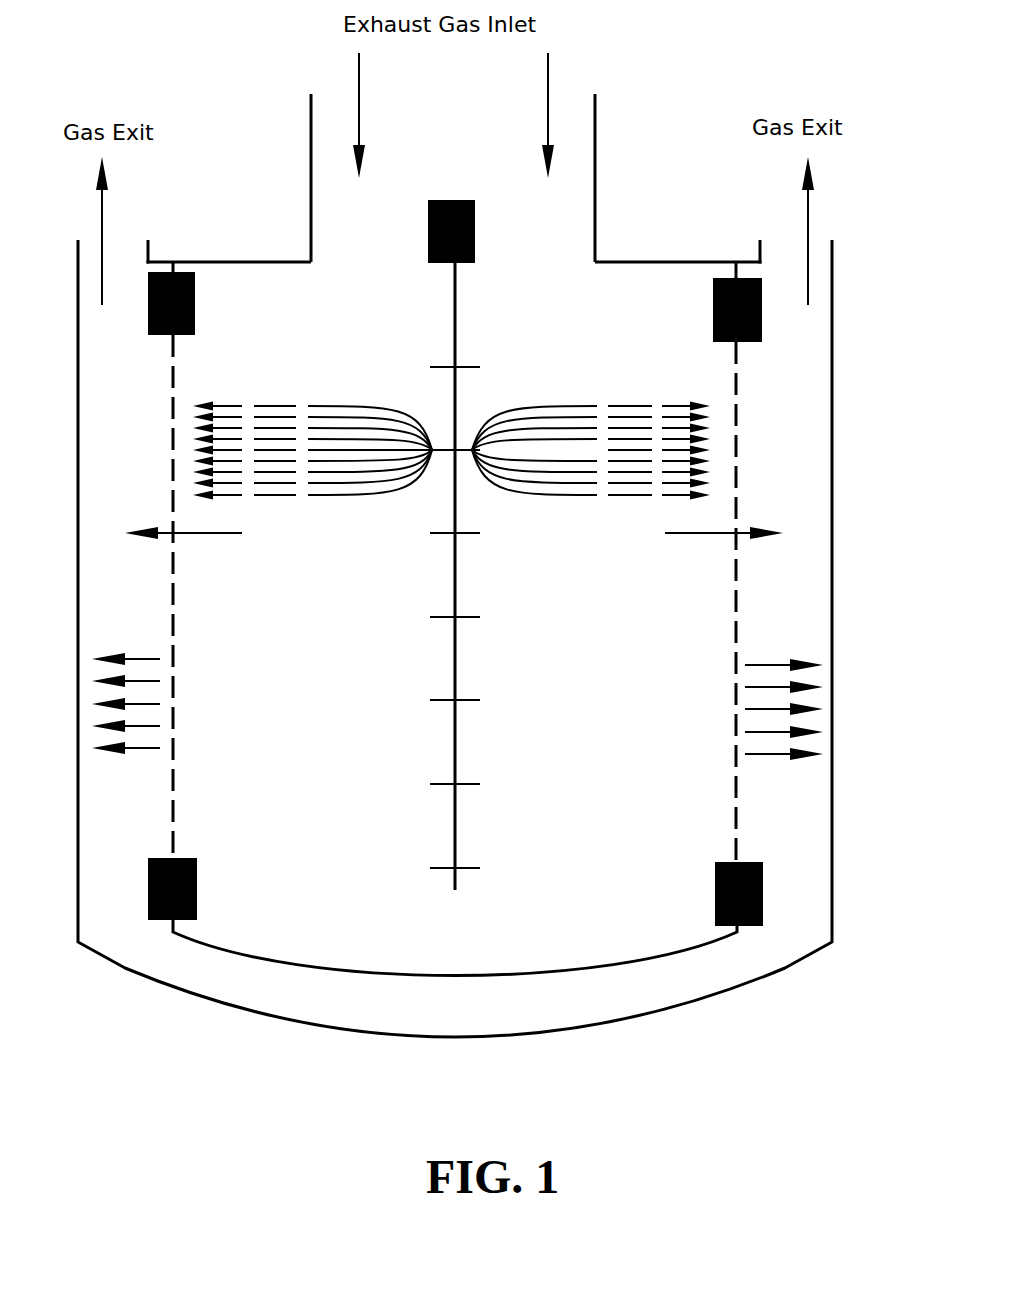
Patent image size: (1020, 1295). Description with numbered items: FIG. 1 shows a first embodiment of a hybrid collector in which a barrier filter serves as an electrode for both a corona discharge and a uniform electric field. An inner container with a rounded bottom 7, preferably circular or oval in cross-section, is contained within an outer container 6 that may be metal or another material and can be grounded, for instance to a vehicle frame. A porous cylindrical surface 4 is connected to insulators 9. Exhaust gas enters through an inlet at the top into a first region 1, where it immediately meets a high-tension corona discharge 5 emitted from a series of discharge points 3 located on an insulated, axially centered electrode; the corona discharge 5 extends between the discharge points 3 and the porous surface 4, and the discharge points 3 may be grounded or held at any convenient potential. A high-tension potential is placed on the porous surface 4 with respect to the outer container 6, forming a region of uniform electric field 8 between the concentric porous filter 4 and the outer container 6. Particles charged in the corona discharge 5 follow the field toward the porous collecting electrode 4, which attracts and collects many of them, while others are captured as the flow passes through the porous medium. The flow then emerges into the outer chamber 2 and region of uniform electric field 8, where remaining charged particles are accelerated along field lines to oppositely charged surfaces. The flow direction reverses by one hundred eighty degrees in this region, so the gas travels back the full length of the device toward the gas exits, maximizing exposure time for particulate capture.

The first region 1 is at (533, 243).
The outer chamber 2 is at (787, 428).
The discharge points 3 is at (465, 780).
The porous cylindrical surface 4 is at (728, 617).
The corona discharge 5 is at (279, 498).
The outer container 6 is at (833, 838).
The rounded bottom 7 is at (610, 955).
The region of uniform electric field 8 is at (772, 757).
The insulators 9 is at (708, 310).